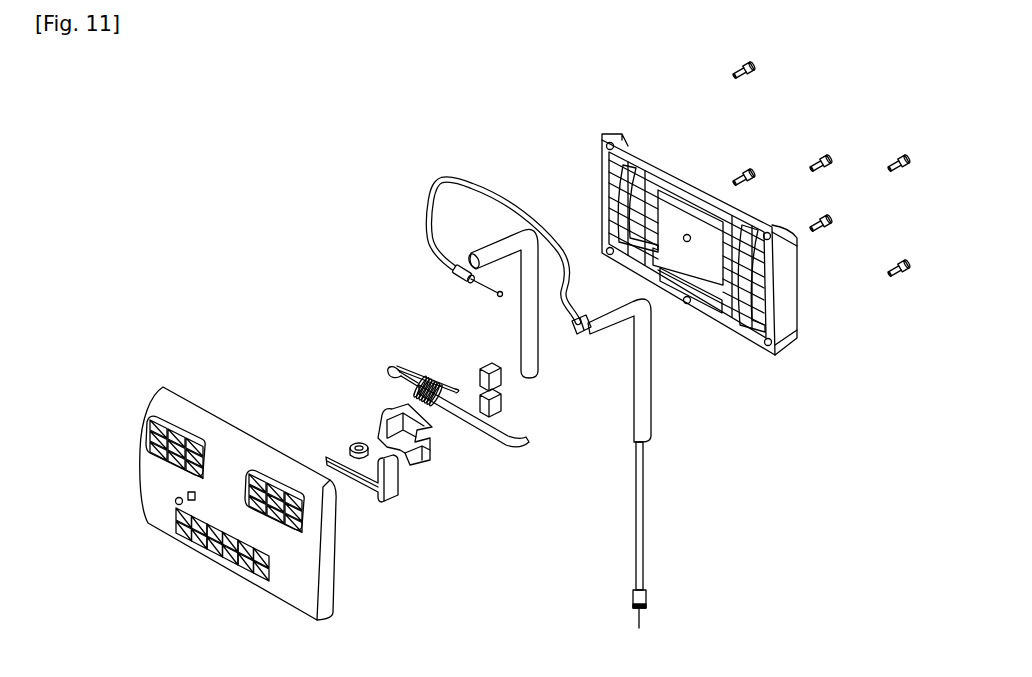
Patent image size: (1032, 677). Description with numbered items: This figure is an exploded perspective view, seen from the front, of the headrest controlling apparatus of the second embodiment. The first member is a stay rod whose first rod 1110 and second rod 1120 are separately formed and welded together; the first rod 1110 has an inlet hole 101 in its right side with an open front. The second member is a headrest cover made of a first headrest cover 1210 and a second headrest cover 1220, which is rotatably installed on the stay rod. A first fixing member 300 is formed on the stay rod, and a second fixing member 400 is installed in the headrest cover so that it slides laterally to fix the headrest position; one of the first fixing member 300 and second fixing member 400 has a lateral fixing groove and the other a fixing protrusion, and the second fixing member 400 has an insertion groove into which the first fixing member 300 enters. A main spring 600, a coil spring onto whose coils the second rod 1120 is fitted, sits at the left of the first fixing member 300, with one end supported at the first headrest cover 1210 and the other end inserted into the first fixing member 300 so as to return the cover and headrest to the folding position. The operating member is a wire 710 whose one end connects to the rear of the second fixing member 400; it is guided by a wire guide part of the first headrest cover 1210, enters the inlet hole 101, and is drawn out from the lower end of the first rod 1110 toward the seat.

The first headrest cover 1210 is at (147, 470).
The second headrest cover 1220 is at (675, 170).
The wire 710 is at (430, 218).
The inlet hole 101 is at (574, 318).
The first rod 1110 is at (650, 380).
The second rod 1120 is at (473, 420).
The main spring 600 is at (432, 380).
The first fixing member 300 is at (417, 457).
The second fixing member 400 is at (363, 487).